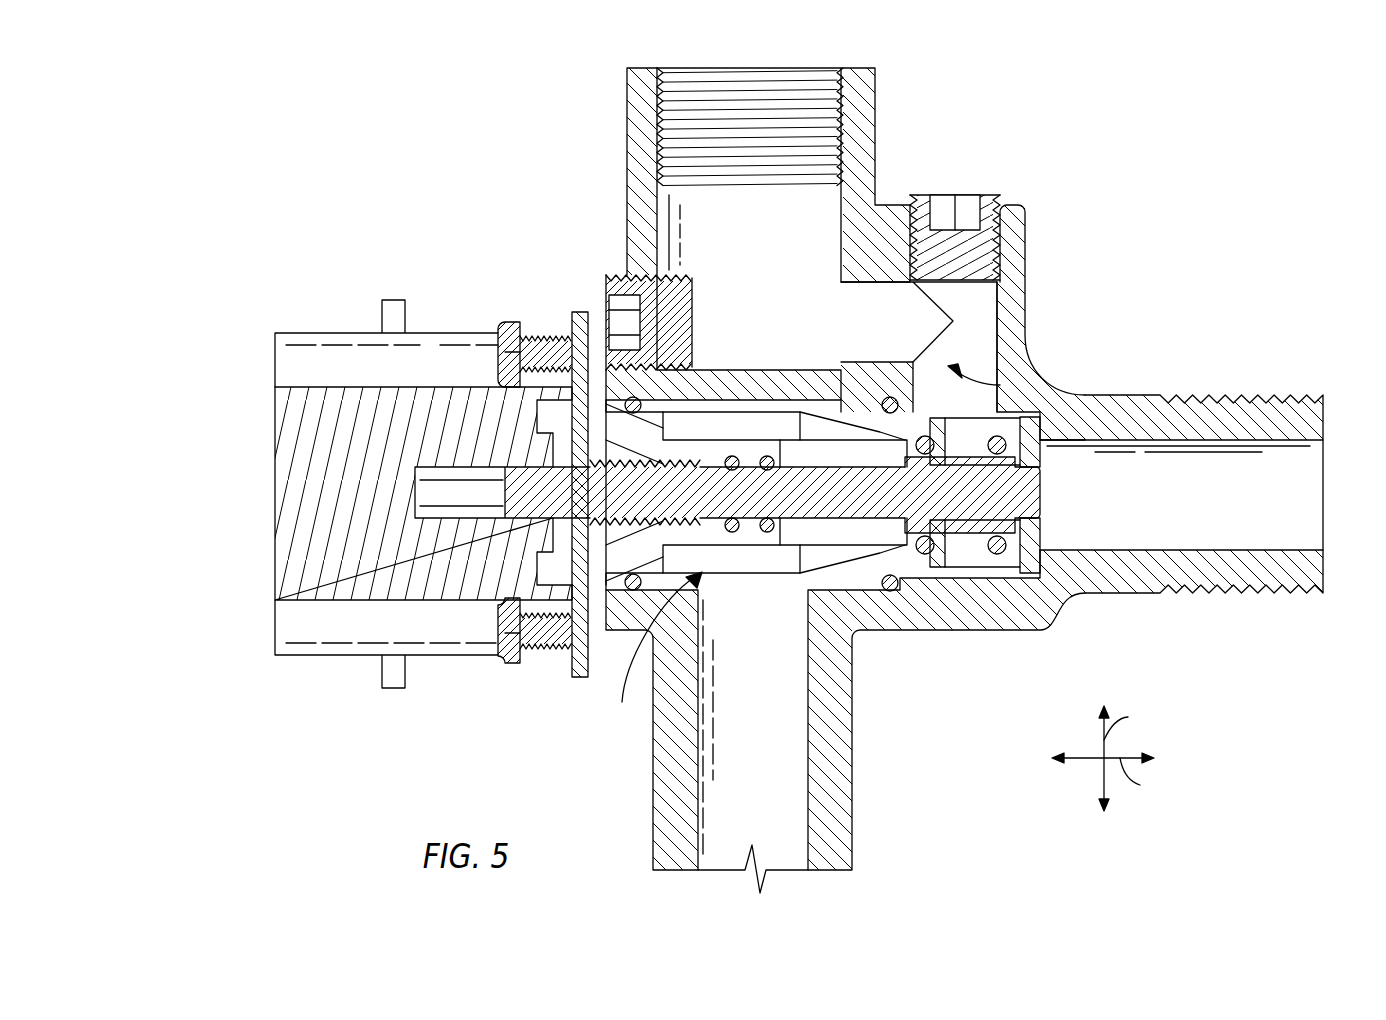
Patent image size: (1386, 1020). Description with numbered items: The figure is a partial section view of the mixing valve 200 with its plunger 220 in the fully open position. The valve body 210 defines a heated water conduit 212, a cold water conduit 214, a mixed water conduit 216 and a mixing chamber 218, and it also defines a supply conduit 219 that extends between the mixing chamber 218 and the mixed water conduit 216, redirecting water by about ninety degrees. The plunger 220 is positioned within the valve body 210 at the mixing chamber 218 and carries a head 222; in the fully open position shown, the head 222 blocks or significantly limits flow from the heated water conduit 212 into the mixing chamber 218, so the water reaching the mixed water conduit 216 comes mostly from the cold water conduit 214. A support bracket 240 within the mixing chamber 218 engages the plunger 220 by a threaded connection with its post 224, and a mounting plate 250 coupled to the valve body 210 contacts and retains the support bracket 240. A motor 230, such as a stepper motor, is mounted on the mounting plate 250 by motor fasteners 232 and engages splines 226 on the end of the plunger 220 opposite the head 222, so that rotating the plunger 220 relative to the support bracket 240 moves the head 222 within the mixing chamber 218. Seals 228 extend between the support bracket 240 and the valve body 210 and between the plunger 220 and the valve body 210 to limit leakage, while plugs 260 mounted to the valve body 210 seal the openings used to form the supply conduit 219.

The mixing valve 200 is at (370, 130).
The valve body 210 is at (866, 645).
The heated water conduit 212 is at (830, 762).
The cold water conduit 214 is at (1135, 597).
The mixed water conduit 216 is at (862, 118).
The mixing chamber 218 is at (651, 651).
The supply conduit 219 is at (1018, 383).
The plunger 220 is at (860, 395).
The head 222 is at (985, 492).
The post 224 is at (668, 452).
The splines 226 is at (418, 490).
The seals 228 is at (713, 396).
The motor 230 is at (294, 364).
The motor fasteners 232 is at (500, 338).
The support bracket 240 is at (815, 568).
The mounting plate 250 is at (578, 640).
The plugs 260 is at (985, 205).